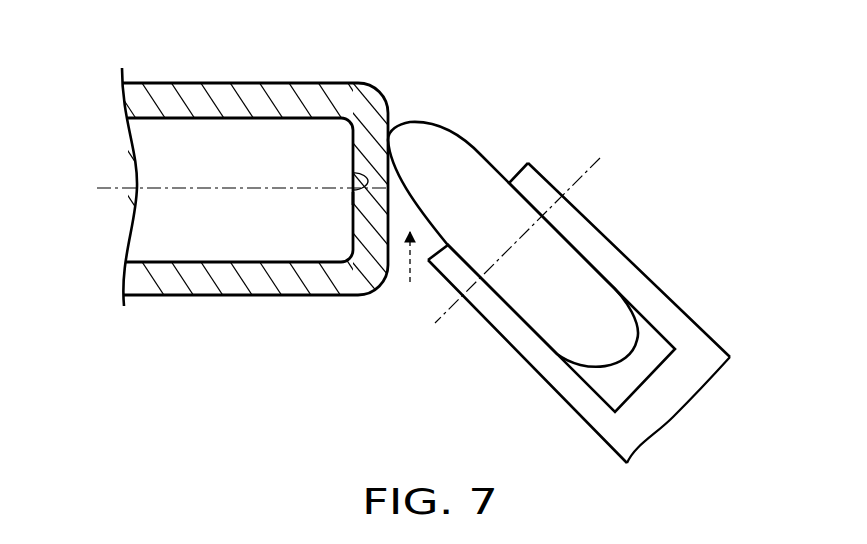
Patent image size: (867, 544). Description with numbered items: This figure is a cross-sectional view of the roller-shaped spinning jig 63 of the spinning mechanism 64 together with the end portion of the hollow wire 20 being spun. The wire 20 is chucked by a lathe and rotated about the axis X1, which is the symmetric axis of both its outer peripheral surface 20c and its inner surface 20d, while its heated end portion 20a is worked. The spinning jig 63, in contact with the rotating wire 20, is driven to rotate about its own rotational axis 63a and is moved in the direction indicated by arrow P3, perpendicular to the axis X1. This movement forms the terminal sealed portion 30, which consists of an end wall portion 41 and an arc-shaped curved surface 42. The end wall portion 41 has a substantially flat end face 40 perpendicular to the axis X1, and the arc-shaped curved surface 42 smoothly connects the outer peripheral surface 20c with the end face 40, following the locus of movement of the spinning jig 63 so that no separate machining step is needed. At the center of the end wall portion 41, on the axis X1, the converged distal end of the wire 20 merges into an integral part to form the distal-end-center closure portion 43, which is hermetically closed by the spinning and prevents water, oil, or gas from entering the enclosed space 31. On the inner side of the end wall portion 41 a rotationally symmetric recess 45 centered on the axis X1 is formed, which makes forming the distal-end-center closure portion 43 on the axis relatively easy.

The wire 20 is at (255, 189).
The end portion of the wire 20a is at (334, 282).
The outer peripheral surface of the wire 20c is at (301, 83).
The inner surface of the wire 20d is at (213, 119).
The terminal sealed portion 30 is at (405, 102).
The enclosed space 31 is at (145, 230).
The end face 40 is at (388, 202).
The end wall portion 41 is at (373, 153).
The arc-shaped curved surface 42 is at (384, 97).
The distal-end-center closure portion 43 is at (348, 173).
The recess 45 is at (352, 198).
The spinning jig 63 is at (478, 176).
The rotational axis 63a is at (594, 172).
The spinning mechanism 64 is at (684, 252).
The arrow P3 is at (412, 296).
The axis X1 is at (110, 187).